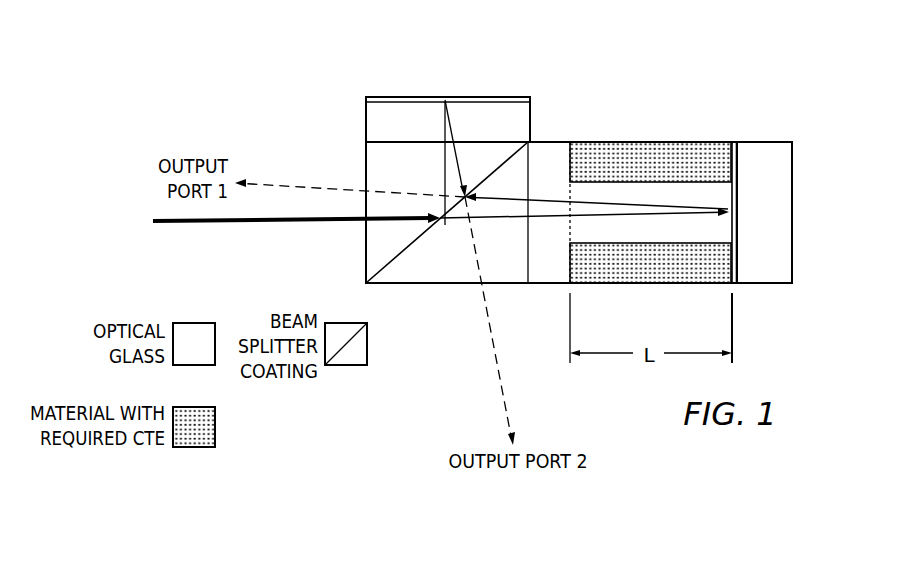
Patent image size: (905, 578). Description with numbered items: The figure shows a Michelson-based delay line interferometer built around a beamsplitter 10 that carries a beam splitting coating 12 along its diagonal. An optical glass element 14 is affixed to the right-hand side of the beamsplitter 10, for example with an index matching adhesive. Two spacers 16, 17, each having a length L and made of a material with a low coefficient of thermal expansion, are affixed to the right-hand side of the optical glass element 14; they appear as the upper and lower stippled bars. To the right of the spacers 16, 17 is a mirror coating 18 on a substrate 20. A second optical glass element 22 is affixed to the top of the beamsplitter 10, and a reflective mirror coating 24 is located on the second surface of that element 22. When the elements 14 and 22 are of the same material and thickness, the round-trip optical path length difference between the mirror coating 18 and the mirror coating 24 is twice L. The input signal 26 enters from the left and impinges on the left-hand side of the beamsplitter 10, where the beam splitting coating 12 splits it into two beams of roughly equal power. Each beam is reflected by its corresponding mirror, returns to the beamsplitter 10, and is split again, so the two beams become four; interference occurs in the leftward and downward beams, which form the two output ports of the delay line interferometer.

The beamsplitter 10 is at (447, 287).
The beam splitting coating 12 is at (405, 248).
The optical glass element 14 is at (548, 141).
The spacer 16 is at (650, 141).
The spacer 17 is at (668, 287).
The mirror coating 18 is at (731, 192).
The substrate 20 is at (763, 287).
The second optical glass element 22 is at (365, 123).
The mirror coating 24 is at (415, 101).
The input signal 26 is at (268, 225).